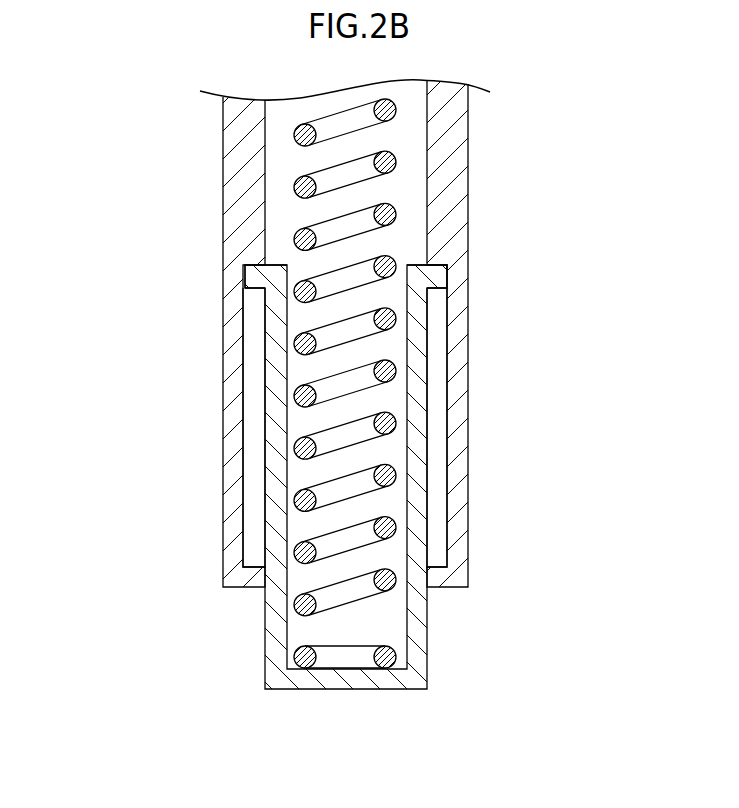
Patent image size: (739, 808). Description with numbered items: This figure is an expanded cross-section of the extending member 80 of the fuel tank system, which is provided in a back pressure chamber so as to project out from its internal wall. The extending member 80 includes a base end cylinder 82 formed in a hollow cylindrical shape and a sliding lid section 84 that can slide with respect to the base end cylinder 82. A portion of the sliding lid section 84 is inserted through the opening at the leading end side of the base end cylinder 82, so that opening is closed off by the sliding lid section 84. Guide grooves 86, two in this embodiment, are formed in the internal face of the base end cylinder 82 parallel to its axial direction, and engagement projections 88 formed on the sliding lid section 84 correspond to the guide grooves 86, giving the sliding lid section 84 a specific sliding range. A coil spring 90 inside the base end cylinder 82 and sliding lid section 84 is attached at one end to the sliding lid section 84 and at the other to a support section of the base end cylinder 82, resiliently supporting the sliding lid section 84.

The extending member 80 is at (120, 633).
The base end cylinder 82 is at (216, 532).
The sliding lid section 84 is at (256, 653).
The guide groove 86 is at (240, 437).
The engagement projection 88 is at (253, 287).
The coil spring 90 is at (395, 207).